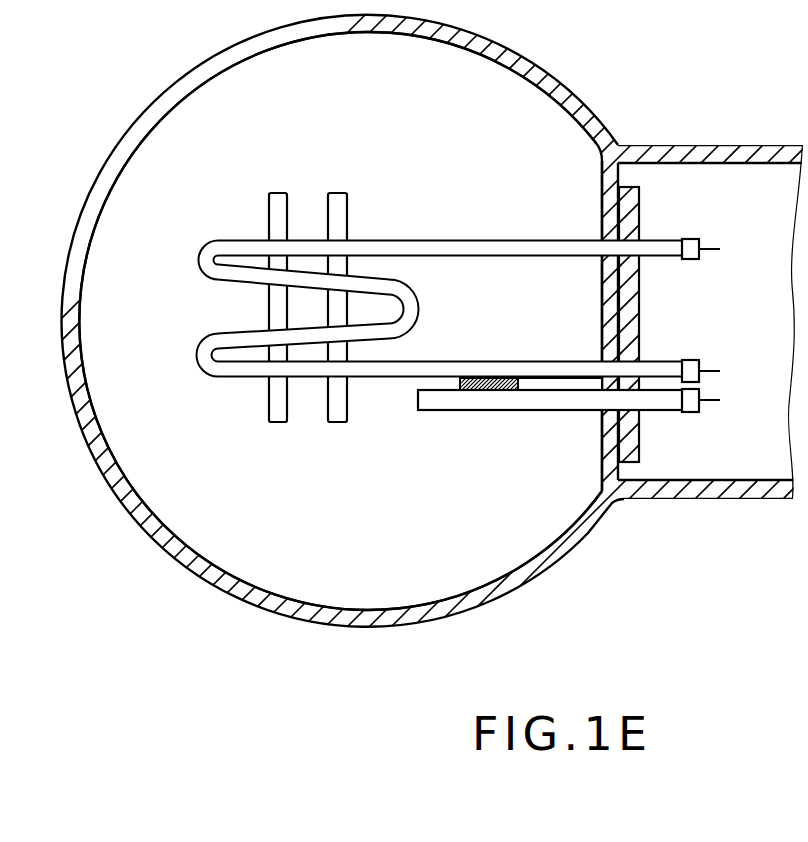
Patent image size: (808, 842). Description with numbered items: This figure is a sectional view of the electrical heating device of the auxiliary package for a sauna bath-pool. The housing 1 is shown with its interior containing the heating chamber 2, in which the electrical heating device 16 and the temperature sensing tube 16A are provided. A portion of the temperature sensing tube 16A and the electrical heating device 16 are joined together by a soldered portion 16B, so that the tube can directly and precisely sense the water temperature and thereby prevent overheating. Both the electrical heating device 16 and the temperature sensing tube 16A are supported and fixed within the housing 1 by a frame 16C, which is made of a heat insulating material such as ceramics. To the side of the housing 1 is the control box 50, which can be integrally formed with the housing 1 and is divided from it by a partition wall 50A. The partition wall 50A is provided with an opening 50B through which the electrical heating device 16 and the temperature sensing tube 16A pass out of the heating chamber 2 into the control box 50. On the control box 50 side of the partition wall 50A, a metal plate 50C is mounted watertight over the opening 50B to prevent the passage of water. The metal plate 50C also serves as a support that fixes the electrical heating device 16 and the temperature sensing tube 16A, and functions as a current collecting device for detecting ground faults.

The housing 1 is at (218, 578).
The heating chamber 2 is at (390, 568).
The electrical heating device 16 is at (428, 239).
The temperature sensing tube 16A is at (560, 400).
The soldered portion 16B is at (462, 387).
The frame 16C is at (272, 410).
The control box 50 is at (742, 467).
The partition wall 50A is at (612, 176).
The opening 50B is at (604, 297).
The metal plate 50C is at (628, 220).